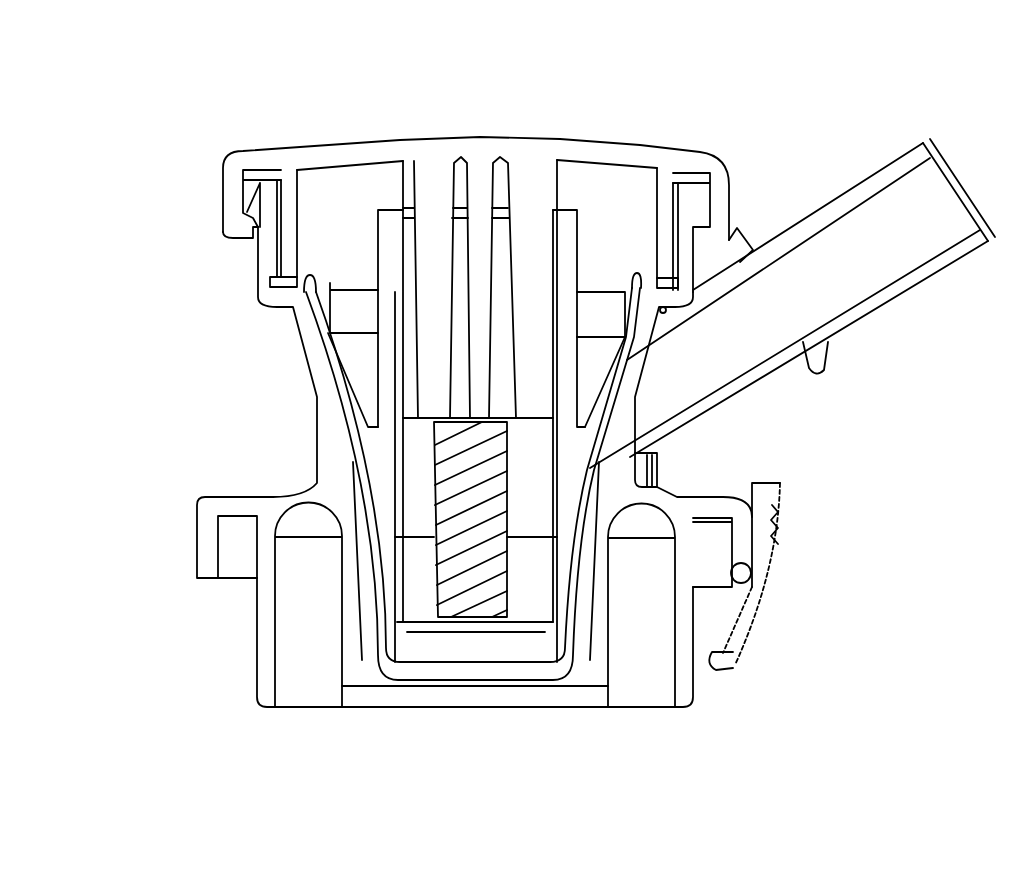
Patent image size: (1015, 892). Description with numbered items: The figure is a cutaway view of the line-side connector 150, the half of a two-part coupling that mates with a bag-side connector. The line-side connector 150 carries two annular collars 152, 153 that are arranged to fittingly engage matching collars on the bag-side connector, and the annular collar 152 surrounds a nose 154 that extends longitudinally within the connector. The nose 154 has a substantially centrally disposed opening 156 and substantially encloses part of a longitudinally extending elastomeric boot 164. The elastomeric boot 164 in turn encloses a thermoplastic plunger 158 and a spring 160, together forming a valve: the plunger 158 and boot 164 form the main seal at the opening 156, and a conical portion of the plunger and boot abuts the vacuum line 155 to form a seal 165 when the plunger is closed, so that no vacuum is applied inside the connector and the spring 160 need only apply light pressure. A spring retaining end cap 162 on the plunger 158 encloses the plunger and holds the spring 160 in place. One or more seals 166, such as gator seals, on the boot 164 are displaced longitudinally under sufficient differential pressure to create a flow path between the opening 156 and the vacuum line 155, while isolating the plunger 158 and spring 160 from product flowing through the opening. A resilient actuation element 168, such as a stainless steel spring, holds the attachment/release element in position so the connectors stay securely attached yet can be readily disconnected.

The line-side connector 150 is at (118, 136).
The annular collar 152 is at (260, 677).
The annular collar 153 is at (206, 542).
The nose 154 is at (358, 653).
The vacuum line 155 is at (823, 348).
The opening 156 is at (440, 686).
The thermoplastic plunger 158 is at (362, 432).
The spring 160 is at (515, 430).
The spring retaining end cap 162 is at (437, 163).
The elastomeric boot 164 is at (573, 643).
The seal 165 is at (627, 380).
The seals 166 is at (270, 280).
The resilient actuation element 168 is at (740, 523).